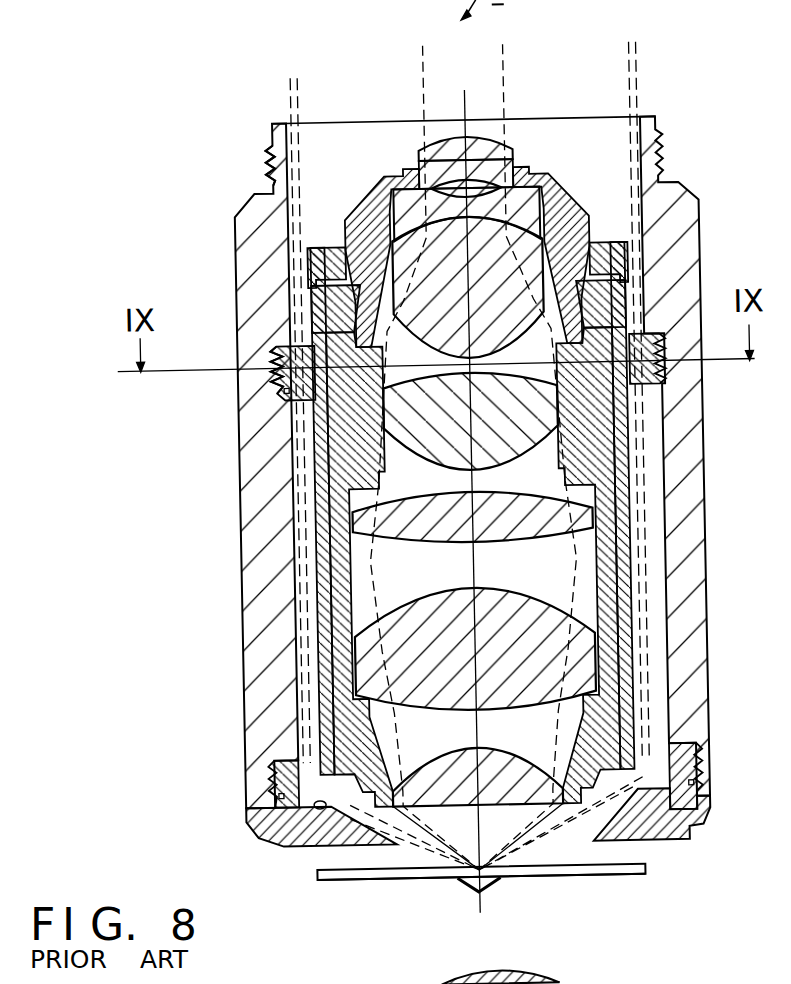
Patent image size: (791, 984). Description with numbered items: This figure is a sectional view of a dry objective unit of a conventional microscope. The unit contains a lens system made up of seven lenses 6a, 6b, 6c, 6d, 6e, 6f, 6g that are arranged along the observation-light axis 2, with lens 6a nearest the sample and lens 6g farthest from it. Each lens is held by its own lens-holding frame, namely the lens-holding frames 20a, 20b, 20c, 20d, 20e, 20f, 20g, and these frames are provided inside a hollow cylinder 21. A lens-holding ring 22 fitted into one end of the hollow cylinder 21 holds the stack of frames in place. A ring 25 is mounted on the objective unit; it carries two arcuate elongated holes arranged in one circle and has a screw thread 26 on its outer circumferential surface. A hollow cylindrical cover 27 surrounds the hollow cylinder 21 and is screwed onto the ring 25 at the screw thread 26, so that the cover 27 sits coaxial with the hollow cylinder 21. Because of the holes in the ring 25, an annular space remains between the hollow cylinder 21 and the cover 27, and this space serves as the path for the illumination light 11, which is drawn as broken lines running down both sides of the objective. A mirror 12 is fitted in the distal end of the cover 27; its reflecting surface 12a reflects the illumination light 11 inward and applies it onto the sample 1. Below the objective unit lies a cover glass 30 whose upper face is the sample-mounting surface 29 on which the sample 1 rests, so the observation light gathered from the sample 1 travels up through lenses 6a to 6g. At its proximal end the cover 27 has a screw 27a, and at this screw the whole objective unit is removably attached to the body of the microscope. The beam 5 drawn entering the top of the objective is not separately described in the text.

The sample 1 is at (489, 883).
The observation-light axis 2 is at (462, 107).
The light beam 5 is at (426, 83).
The lens 6a is at (525, 761).
The lens 6b is at (538, 605).
The lens 6c is at (390, 541).
The lens 6d is at (634, 450).
The lens 6e is at (537, 294).
The lens 6f is at (530, 201).
The lens 6g is at (512, 162).
The illumination light 11 is at (291, 87).
The mirror 12 is at (271, 840).
The reflecting surface 12a is at (301, 804).
The lens-holding frame 20a is at (319, 697).
The lens-holding frame 20b is at (324, 590).
The lens-holding frame 20c is at (323, 507).
The lens-holding frame 20d is at (323, 460).
The lens-holding frame 20e is at (324, 409).
The lens-holding frame 20f is at (305, 327).
The lens-holding frame 20g is at (300, 287).
The hollow cylinder 21 is at (305, 744).
The lens-holding ring 22 is at (328, 244).
The ring 25 is at (273, 353).
The screw thread 26 is at (272, 369).
The hollow cylindrical cover 27 is at (235, 786).
The screw 27a is at (264, 146).
The sample-mounting surface 29 is at (394, 877).
The cover glass 30 is at (303, 877).